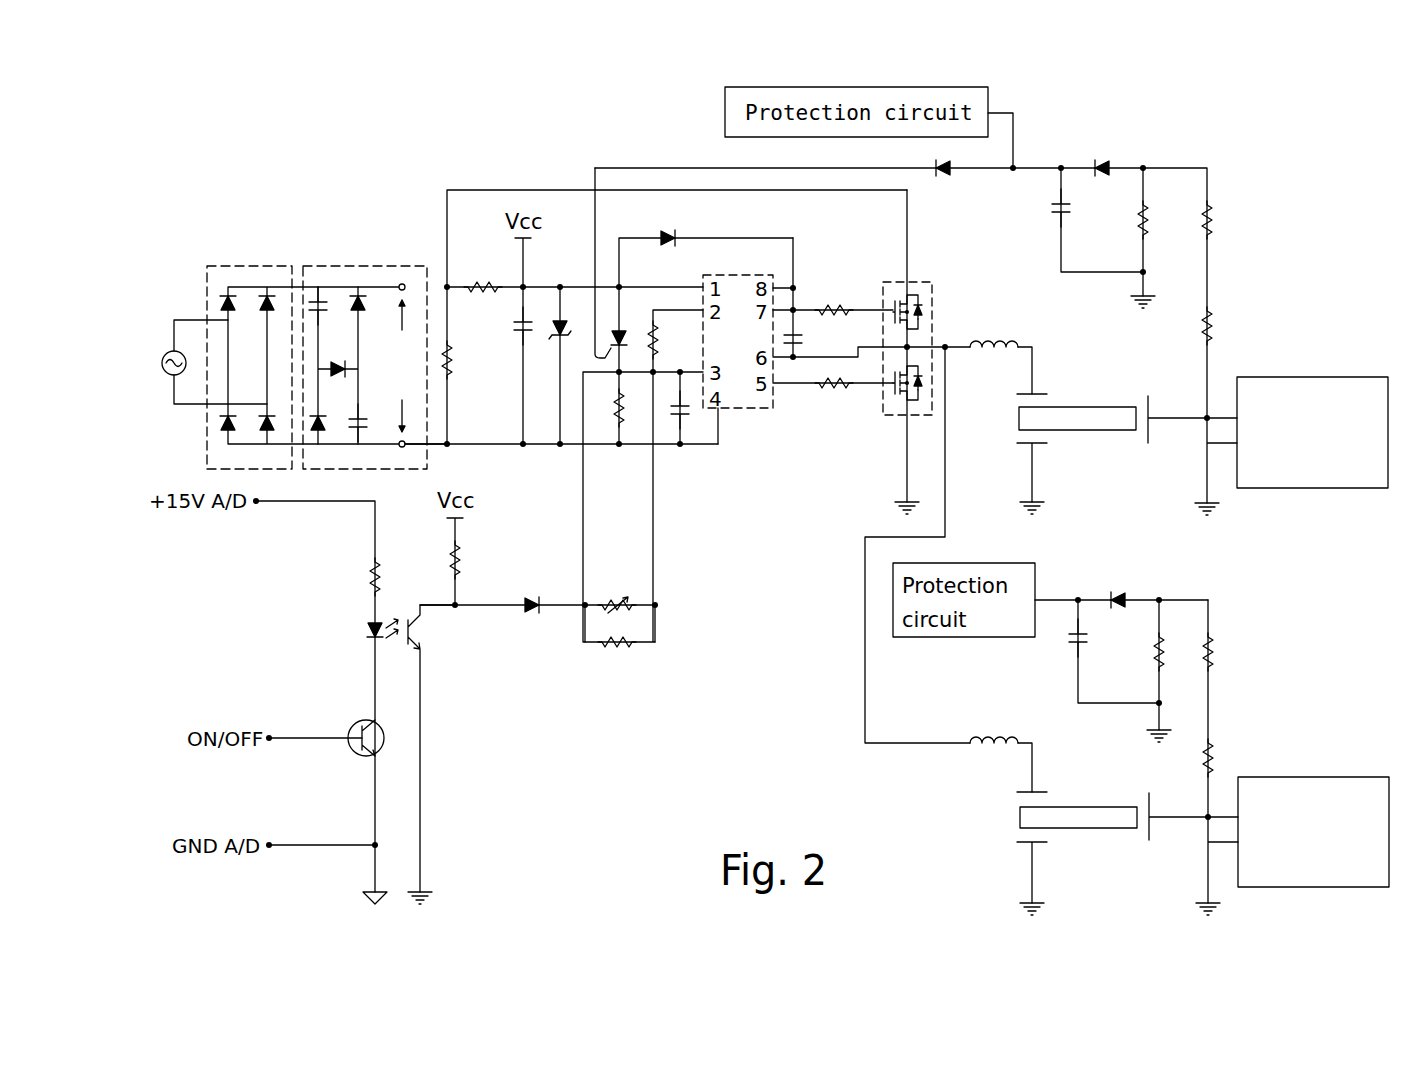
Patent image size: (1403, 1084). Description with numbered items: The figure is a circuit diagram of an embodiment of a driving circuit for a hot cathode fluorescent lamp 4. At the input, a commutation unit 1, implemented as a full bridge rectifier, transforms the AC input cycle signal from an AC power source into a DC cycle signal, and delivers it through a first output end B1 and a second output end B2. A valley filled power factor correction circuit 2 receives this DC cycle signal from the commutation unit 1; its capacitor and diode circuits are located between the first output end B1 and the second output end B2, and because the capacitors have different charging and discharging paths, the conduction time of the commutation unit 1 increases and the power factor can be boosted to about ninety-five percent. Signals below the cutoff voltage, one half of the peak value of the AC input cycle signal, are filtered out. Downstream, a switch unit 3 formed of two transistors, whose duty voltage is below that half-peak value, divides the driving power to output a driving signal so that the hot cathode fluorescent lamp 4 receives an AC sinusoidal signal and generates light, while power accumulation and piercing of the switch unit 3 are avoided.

The commutation unit 1 is at (253, 270).
The valley filled power factor correction circuit 2 is at (353, 270).
The switch unit 3 is at (930, 292).
The hot cathode fluorescent lamp 4 is at (1287, 387).
The first output end B1 is at (402, 283).
The second output end B2 is at (413, 470).